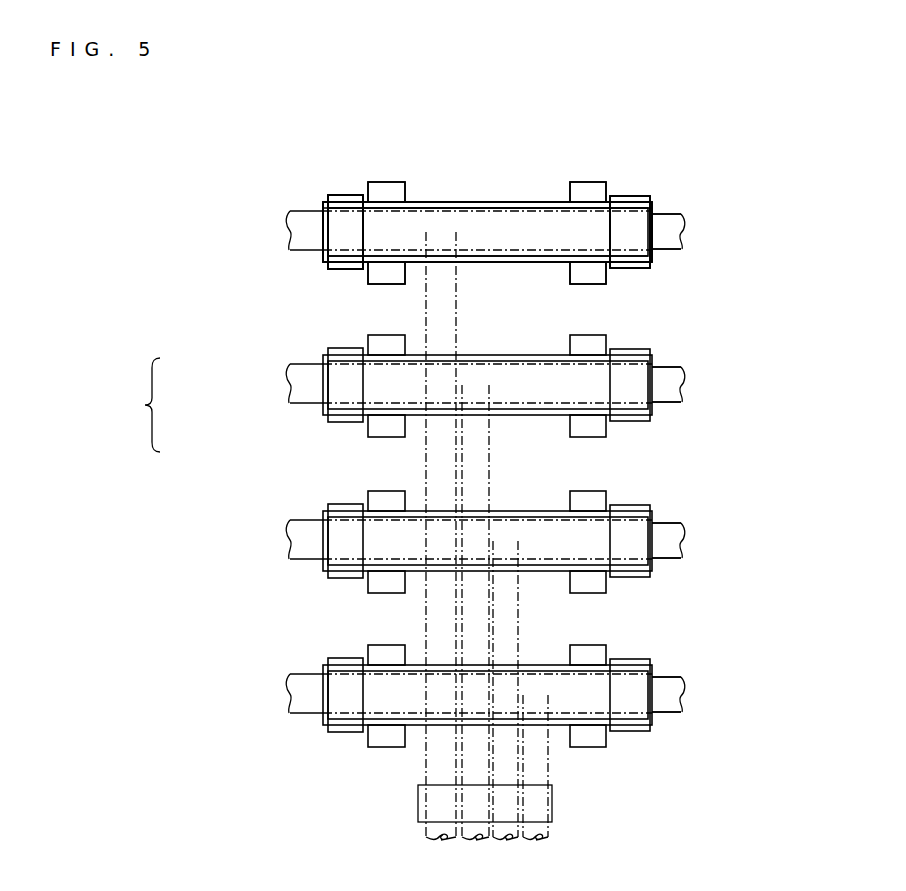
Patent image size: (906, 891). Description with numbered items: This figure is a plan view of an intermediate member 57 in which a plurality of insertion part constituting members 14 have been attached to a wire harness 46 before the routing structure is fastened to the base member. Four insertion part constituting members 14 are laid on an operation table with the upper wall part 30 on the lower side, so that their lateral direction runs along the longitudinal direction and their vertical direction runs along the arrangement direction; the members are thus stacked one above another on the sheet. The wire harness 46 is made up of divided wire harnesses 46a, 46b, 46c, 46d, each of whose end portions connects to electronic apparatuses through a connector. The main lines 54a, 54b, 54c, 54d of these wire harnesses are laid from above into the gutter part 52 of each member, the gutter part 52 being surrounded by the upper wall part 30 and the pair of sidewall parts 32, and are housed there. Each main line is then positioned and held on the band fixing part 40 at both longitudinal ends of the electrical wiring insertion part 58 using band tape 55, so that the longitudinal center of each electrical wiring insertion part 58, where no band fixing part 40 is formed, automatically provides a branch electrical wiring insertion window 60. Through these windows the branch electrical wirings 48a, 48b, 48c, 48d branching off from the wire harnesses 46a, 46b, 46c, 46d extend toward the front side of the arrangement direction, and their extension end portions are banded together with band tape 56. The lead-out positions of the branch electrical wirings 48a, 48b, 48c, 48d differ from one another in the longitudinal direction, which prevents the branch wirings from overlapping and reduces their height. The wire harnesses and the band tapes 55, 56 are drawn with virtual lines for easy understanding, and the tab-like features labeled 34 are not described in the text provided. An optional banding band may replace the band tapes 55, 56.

The insertion part constituting member 14 is at (498, 170).
The upper wall part 30 is at (433, 222).
The sidewall part 32 is at (520, 204).
The mounting tab 34 is at (388, 191).
The band fixing part 40 is at (345, 232).
The wire harness 46 is at (140, 405).
The wire harness 46a is at (281, 232).
The wire harness 46b is at (281, 385).
The wire harness 46c is at (298, 535).
The wire harness 46d is at (298, 668).
The branch electrical wiring 48a is at (440, 332).
The branch electrical wiring 48b is at (475, 463).
The branch electrical wiring 48c is at (502, 617).
The branch electrical wiring 48d is at (537, 757).
The gutter part 52 is at (384, 228).
The main line 54a is at (670, 233).
The main line 54b is at (670, 386).
The main line 54c is at (670, 542).
The main line 54d is at (670, 695).
The band tape 55 is at (348, 266).
The band tape 56 is at (552, 800).
The intermediate member 57 is at (493, 132).
The electrical wiring insertion part 58 is at (658, 240).
The branch electrical wiring insertion window 60 is at (507, 194).